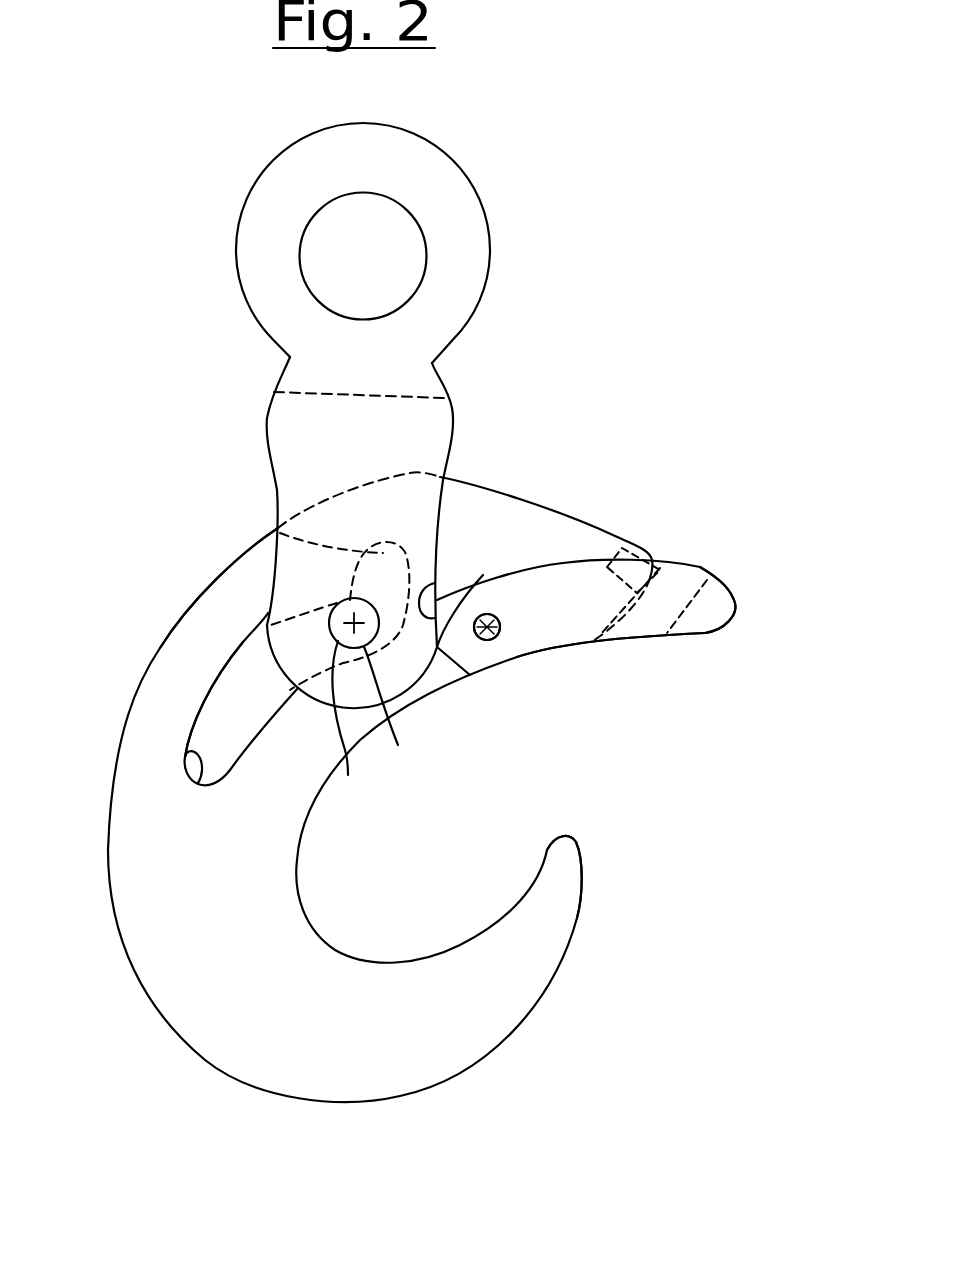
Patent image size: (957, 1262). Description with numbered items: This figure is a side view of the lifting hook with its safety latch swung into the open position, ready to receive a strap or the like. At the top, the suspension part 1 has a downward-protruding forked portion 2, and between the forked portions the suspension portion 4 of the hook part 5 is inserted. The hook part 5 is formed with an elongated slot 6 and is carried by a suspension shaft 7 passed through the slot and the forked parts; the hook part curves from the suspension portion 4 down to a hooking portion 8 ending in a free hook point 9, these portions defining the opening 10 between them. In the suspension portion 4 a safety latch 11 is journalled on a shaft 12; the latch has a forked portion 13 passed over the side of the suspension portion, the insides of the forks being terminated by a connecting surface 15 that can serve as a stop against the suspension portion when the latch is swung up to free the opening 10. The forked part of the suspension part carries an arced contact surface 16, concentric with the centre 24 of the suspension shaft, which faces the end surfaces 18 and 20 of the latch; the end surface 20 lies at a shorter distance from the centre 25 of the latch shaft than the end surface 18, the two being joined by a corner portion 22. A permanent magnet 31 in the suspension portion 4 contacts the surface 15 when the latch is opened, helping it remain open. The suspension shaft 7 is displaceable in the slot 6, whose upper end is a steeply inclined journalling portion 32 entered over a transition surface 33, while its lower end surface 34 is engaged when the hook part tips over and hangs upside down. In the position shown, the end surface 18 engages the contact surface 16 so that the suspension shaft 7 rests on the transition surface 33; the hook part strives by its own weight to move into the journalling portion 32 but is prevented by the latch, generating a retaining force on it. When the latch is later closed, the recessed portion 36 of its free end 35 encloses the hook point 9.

The suspension part 1 is at (332, 415).
The forked portion 2 is at (293, 478).
The suspension portion 4 is at (487, 508).
The hook part 5 is at (190, 596).
The elongated slot 6 is at (231, 683).
The suspension shaft 7 is at (348, 775).
The hooking portion 8 is at (377, 847).
The free hook point 9 is at (577, 836).
The opening 10 is at (528, 785).
The safety latch 11 is at (625, 577).
The shaft 12 is at (485, 640).
The forked portion 13 is at (543, 630).
The connecting surface 15 is at (602, 640).
The arced contact surface 16 is at (433, 672).
The end surface 18 is at (436, 575).
The end surface 20 is at (450, 660).
The corner portion 22 is at (483, 575).
The centre of the suspension shaft 24 is at (398, 745).
The centre of the safety latch shaft 25 is at (492, 617).
The permanent magnet 31 is at (647, 550).
The journalling portion 32 is at (280, 533).
The transition surface 33 is at (343, 597).
The lower end surface 34 is at (184, 752).
The free end 35 is at (737, 603).
The recessed portion 36 is at (703, 613).